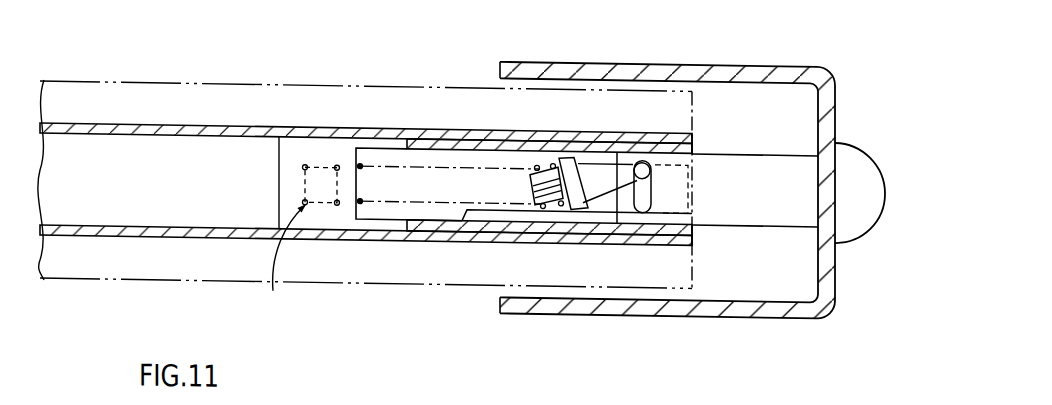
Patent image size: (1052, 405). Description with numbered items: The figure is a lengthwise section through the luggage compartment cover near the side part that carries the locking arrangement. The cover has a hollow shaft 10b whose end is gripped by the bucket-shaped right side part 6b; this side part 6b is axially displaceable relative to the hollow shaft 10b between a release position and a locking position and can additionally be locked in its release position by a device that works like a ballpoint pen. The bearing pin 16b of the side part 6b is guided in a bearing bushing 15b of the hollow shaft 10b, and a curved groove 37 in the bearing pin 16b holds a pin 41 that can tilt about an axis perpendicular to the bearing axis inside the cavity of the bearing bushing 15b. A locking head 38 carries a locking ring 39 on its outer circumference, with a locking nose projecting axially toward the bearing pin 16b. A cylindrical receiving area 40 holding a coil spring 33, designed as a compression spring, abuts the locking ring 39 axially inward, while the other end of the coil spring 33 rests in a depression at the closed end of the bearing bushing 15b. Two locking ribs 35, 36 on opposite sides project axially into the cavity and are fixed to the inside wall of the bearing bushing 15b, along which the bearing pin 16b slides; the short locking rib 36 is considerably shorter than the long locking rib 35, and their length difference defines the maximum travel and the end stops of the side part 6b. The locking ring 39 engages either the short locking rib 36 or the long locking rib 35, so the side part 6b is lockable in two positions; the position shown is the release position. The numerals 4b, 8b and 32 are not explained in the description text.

The housing 4b is at (117, 279).
The side part 6b is at (687, 54).
The push button 8b is at (853, 212).
The hollow shaft 10b is at (235, 124).
The bearing bushing 15b is at (280, 155).
The bearing pin 16b is at (761, 172).
The direction of movement 32 is at (283, 265).
The coil spring 33 is at (380, 208).
The locking rib 35 is at (480, 210).
The locking rib 36 is at (593, 148).
The curved groove 37 is at (647, 191).
The locking head 38 is at (622, 203).
The locking ring 39 is at (577, 188).
The cylindrical receiving area 40 is at (547, 199).
The pin 41 is at (691, 123).